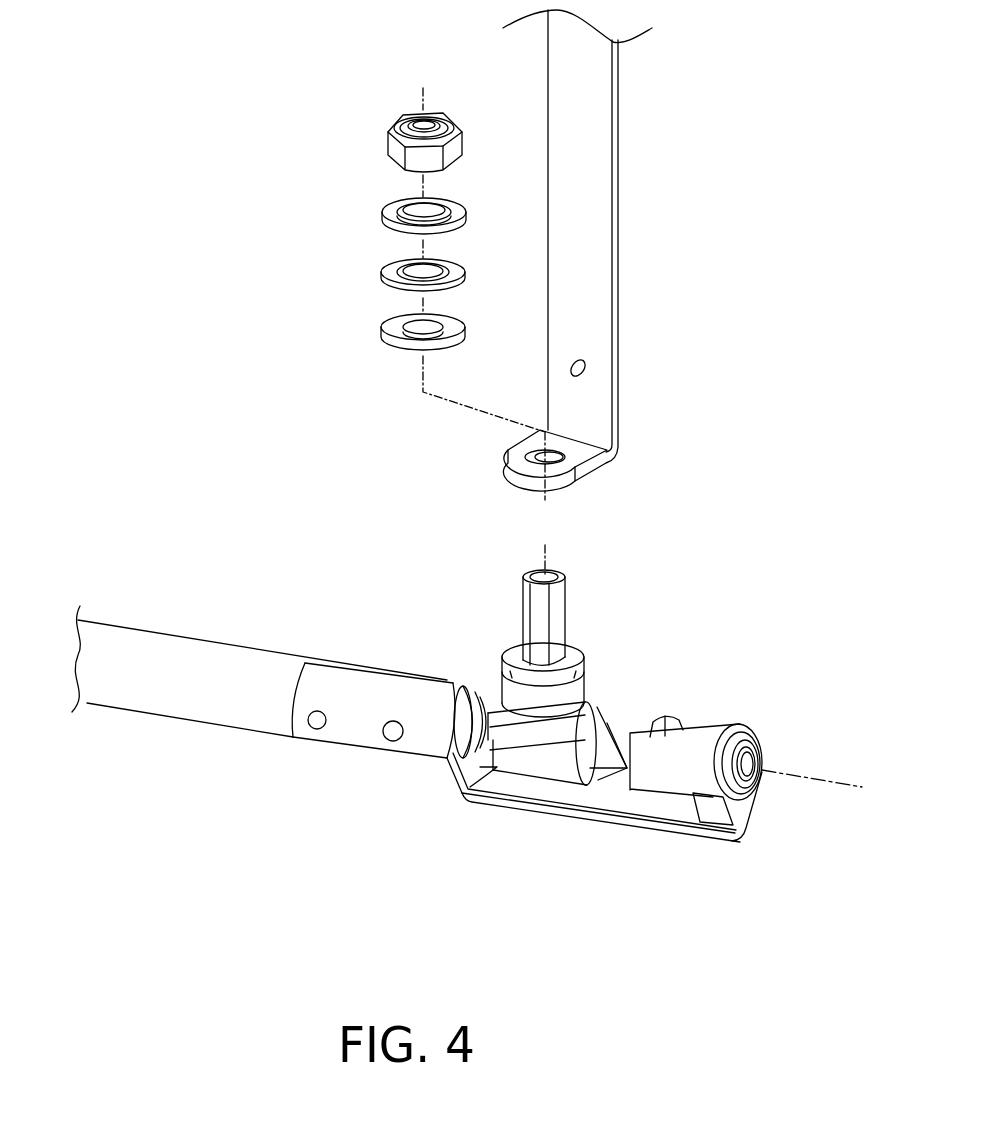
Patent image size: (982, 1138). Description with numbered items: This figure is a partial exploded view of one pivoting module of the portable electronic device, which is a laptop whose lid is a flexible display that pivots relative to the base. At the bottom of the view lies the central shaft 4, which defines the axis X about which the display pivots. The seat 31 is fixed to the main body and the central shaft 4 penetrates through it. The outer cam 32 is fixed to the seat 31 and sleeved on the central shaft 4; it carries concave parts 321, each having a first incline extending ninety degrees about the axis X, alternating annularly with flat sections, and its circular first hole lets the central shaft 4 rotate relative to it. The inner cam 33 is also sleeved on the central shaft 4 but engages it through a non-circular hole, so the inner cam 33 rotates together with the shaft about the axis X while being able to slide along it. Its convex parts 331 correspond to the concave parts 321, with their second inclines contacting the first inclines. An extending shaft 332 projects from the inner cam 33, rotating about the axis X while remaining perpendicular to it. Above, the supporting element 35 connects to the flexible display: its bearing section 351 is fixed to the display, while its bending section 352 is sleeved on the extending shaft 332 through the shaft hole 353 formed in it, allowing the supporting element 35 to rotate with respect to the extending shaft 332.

The central shaft 4 is at (195, 632).
The seat 31 is at (727, 815).
The outer cam 32 is at (696, 771).
The concave part 321 is at (667, 718).
The inner cam 33 is at (557, 765).
The convex part 331 is at (607, 753).
The extending shaft 332 is at (542, 615).
The supporting element 35 is at (567, 258).
The bearing section 351 is at (592, 252).
The bending section 352 is at (550, 468).
The shaft hole 353 is at (520, 452).
The axis X is at (830, 778).